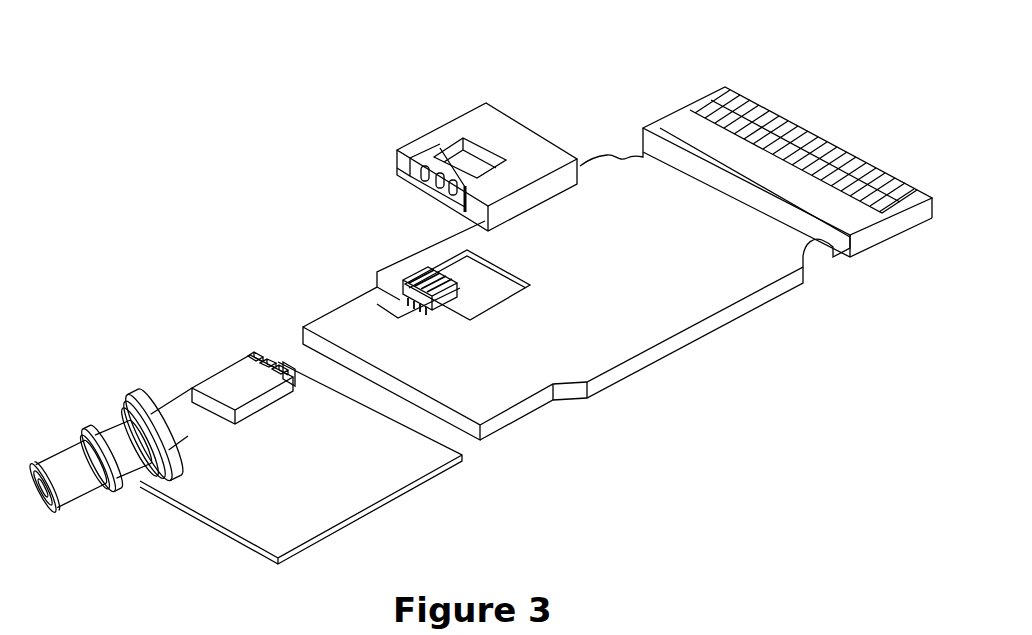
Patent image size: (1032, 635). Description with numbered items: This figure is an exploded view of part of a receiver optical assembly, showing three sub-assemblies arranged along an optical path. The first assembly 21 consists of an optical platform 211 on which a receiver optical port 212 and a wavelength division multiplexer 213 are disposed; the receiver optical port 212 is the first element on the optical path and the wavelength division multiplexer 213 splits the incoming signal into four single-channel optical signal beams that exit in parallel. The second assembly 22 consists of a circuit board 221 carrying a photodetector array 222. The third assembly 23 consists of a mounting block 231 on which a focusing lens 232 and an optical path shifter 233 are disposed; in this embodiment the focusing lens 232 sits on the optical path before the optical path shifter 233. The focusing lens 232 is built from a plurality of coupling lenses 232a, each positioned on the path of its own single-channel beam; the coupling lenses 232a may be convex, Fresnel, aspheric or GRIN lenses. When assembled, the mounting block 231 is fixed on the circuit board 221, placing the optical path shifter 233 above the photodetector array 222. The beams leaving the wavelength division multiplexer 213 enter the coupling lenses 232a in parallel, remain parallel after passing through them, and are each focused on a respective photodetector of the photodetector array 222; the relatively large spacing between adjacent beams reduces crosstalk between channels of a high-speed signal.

The first assembly 21 is at (160, 283).
The optical platform 211 is at (183, 387).
The receiver optical port 212 is at (115, 403).
The wavelength division multiplexer 213 is at (238, 385).
The second assembly 22 is at (292, 262).
The circuit board 221 is at (358, 313).
The photodetector array 222 is at (423, 282).
The third assembly 23 is at (547, 53).
The mounting block 231 is at (520, 150).
The focusing lens 232 is at (437, 157).
The coupling lenses 232a is at (393, 157).
The optical path shifter 233 is at (463, 157).